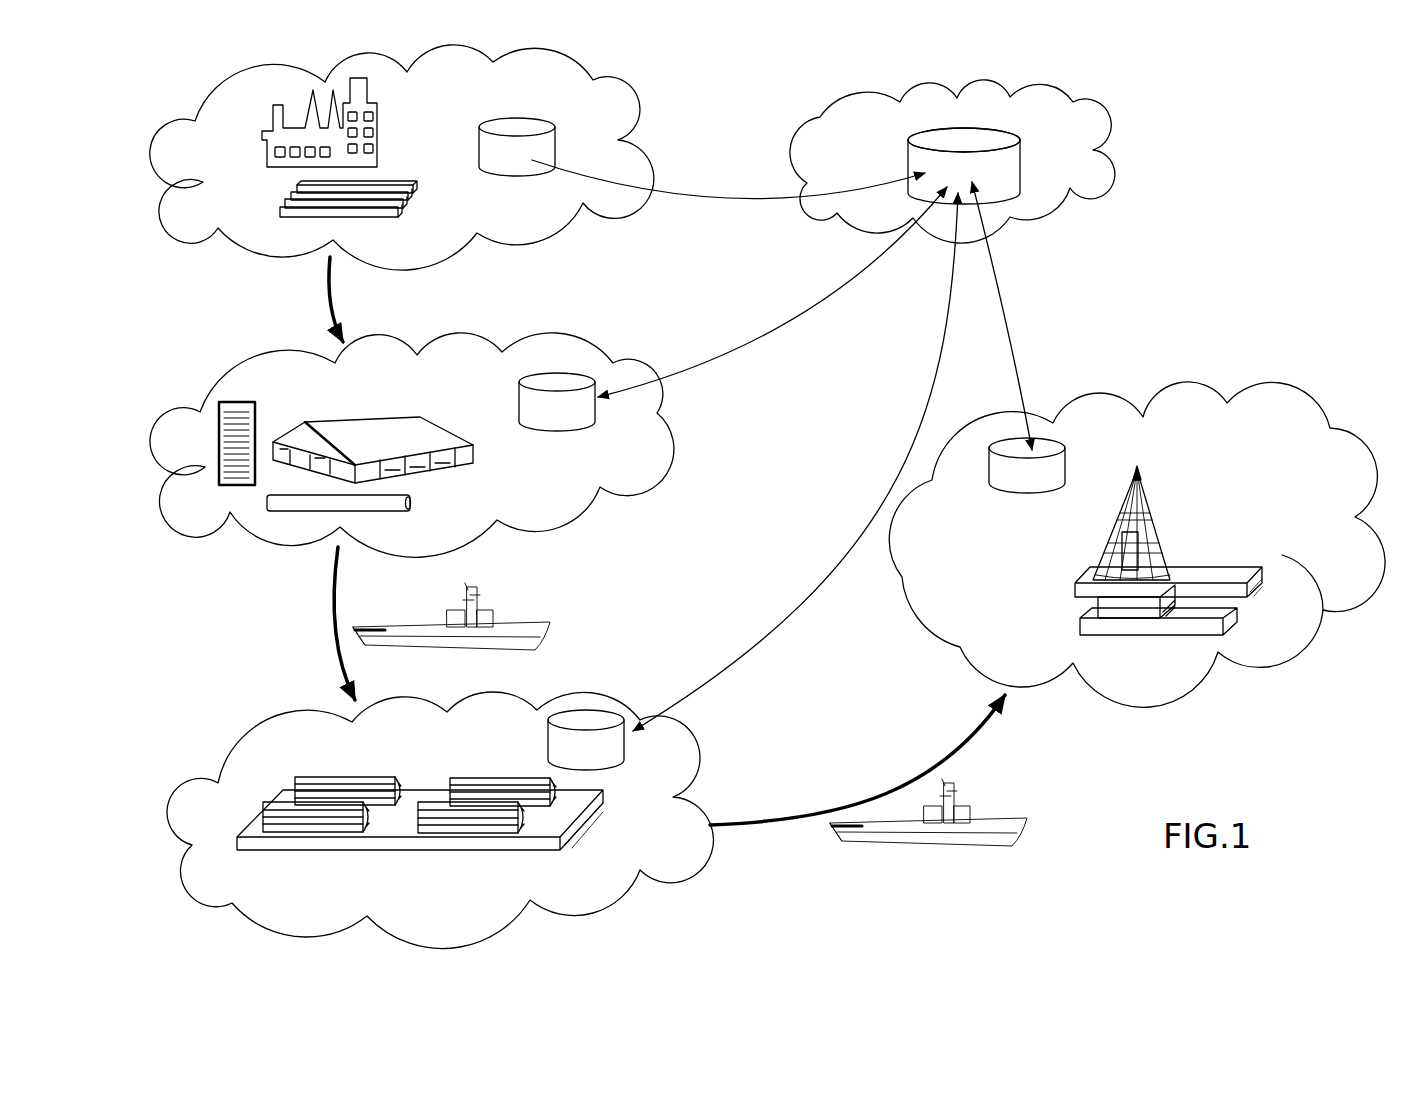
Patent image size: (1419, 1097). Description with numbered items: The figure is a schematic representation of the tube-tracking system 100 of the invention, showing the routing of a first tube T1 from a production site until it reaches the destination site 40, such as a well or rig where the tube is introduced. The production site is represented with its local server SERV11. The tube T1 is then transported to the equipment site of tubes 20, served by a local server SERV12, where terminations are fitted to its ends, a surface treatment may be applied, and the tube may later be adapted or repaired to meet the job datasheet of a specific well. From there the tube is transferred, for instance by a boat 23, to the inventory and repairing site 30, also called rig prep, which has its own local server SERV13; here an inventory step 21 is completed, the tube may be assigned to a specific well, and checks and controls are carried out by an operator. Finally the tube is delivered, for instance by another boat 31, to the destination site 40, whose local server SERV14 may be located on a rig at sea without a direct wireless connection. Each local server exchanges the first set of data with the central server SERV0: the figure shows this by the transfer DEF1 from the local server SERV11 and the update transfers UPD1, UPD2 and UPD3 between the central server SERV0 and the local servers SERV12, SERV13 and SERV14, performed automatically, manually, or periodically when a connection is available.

The central server / management system 100 is at (977, 140).
The central server SERV0 is at (1013, 187).
The local server SERV11 is at (497, 174).
The local server SERV12 is at (552, 407).
The local server SERV13 is at (578, 700).
The local server SERV14 is at (1028, 488).
The equipment site of tubes 20 is at (362, 432).
The inventory step 21 is at (200, 410).
The first tube T1 is at (288, 512).
The boat 23 is at (508, 620).
The inventory and repairing site 30 is at (437, 793).
The transport vessel 31 is at (953, 833).
The destination site 40 is at (1165, 550).
The definition data flow DEF1 is at (728, 196).
The update data flow UPD1 is at (772, 292).
The update data flow UPD2 is at (795, 462).
The update data flow UPD3 is at (1016, 316).